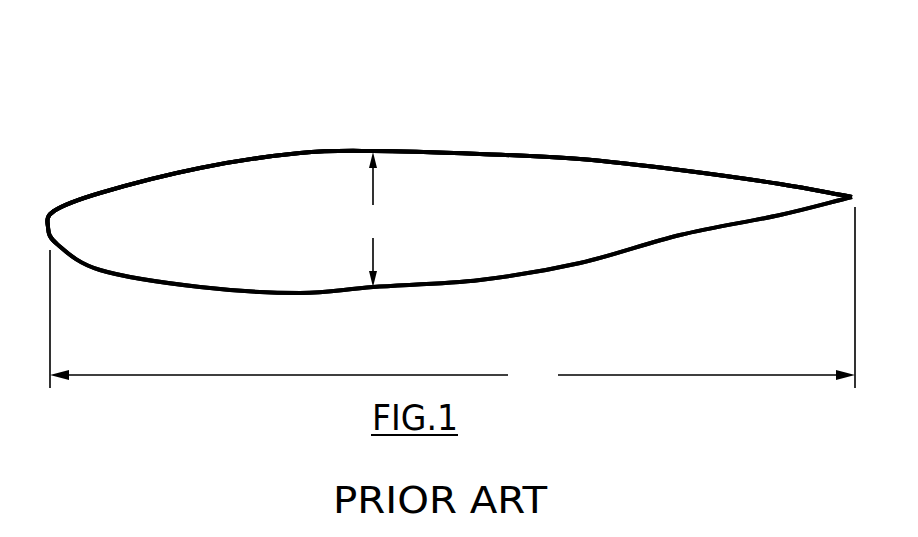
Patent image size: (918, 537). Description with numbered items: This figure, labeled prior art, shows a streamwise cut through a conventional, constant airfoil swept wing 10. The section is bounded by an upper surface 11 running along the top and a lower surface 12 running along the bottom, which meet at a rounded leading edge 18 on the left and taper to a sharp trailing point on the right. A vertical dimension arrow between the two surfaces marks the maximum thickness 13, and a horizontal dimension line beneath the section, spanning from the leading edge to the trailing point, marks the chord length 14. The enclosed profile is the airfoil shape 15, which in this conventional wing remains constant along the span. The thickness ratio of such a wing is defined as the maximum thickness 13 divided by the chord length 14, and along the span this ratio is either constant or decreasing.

The constant airfoil swept wing 10 is at (176, 128).
The upper surface 11 is at (303, 152).
The lower surface 12 is at (448, 288).
The maximum thickness 13 is at (375, 219).
The chord length 14 is at (452, 298).
The airfoil shape 15 is at (498, 165).
The leading edge 18 is at (48, 225).